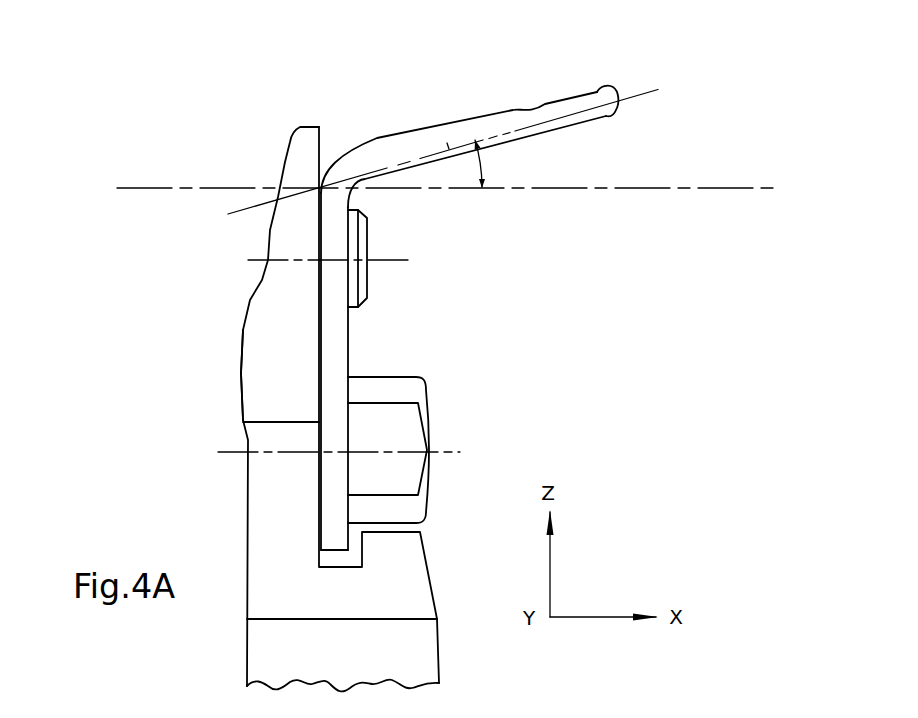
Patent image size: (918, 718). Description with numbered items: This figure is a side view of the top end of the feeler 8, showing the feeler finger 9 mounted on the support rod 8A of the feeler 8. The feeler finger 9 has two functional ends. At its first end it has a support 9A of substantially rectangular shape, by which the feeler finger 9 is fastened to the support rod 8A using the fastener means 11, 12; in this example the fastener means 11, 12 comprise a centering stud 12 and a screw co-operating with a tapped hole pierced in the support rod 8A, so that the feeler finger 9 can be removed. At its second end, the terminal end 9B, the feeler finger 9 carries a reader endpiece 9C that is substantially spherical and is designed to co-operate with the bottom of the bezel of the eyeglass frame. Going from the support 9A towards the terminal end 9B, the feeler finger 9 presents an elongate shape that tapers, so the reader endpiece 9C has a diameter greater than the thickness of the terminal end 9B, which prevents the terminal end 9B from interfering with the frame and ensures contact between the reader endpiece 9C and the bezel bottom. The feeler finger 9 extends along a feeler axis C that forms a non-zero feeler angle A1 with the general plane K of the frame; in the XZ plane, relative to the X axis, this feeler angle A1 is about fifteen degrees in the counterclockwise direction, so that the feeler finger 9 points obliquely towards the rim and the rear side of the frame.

The feeler 8 is at (258, 279).
The support rod 8A is at (258, 382).
The feeler finger 9 is at (475, 280).
The support 9A is at (340, 337).
The terminal end 9B is at (550, 131).
The reader endpiece 9C is at (617, 118).
The fastener means 11 is at (428, 398).
The centering stud 12 is at (368, 285).
The feeler axis C is at (638, 92).
The general plane of the frame K is at (140, 188).
The feeler angle A1 is at (499, 164).